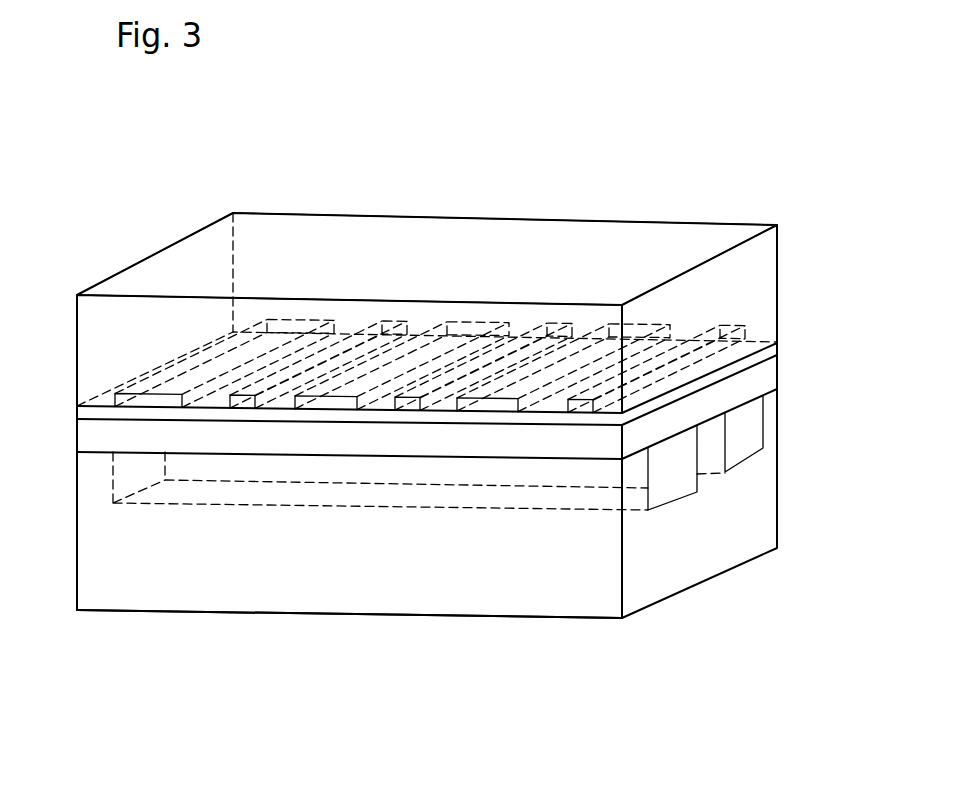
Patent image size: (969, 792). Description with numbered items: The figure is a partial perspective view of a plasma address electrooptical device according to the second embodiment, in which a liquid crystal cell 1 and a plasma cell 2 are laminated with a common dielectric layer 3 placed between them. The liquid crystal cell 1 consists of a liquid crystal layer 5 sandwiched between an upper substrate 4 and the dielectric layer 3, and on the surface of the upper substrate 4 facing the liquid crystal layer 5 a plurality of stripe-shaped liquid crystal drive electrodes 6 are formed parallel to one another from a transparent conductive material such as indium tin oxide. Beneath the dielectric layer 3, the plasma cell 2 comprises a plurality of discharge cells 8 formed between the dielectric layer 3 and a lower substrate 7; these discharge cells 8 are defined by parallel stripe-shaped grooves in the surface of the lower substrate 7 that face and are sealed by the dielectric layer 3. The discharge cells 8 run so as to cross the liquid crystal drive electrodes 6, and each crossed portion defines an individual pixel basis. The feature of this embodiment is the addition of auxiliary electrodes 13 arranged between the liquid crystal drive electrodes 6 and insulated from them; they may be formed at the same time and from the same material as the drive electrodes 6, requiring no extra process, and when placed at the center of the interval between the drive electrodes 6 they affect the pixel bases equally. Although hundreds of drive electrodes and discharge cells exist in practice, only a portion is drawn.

The liquid crystal cell 1 is at (783, 231).
The plasma cell 2 is at (781, 375).
The dielectric layer 3 is at (108, 438).
The upper substrate 4 is at (210, 245).
The liquid crystal layer 5 is at (100, 412).
The liquid crystal drive electrodes 6 is at (160, 402).
The lower substrate 7 is at (638, 588).
The discharge cells 8 is at (743, 448).
The auxiliary electrodes 13 is at (573, 400).